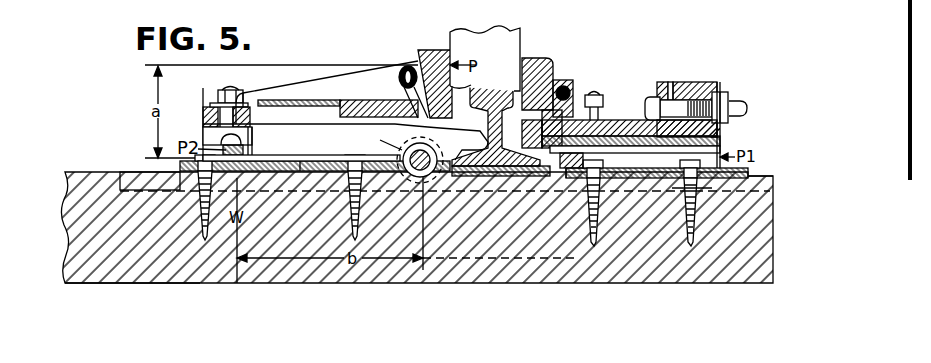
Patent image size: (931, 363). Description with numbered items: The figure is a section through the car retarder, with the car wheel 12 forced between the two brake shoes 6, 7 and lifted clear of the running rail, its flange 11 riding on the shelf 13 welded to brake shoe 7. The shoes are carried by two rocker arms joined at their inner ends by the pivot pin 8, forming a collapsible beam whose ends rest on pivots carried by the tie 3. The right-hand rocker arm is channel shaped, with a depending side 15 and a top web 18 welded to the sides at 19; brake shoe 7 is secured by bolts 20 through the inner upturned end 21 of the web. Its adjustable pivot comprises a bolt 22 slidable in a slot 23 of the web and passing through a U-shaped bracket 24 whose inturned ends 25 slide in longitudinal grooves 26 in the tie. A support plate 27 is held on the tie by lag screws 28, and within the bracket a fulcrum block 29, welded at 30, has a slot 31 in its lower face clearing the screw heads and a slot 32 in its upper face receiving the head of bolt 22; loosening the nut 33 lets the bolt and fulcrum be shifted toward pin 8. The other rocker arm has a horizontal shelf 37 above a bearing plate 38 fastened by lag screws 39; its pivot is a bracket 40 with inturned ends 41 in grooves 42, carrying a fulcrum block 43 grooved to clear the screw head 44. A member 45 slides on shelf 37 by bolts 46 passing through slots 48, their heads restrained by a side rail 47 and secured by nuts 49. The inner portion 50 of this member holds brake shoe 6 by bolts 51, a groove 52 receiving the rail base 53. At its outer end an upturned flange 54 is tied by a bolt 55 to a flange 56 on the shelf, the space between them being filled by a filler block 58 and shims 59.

The tie 3 is at (237, 268).
The brake shoe 6 is at (527, 60).
The brake shoe 7 is at (425, 53).
The pivot pin 8 is at (410, 152).
The flange 11 is at (496, 124).
The car wheel 12 is at (540, 25).
The shelf 13 is at (471, 86).
The depending side 15 is at (297, 88).
The shelf or web 18 is at (323, 110).
The weld 19 is at (355, 100).
The bolts 20 is at (404, 70).
The inner upturned end 21 is at (398, 94).
The bolt 22 is at (205, 112).
The slot 23 is at (264, 108).
The U-shaped bracket 24 is at (246, 97).
The inturned ends 25 is at (212, 242).
The longitudinal grooves 26 is at (147, 176).
The support plate 27 is at (306, 174).
The lag screws 28 is at (351, 214).
The fulcrum block 29 is at (247, 151).
The weld 30 is at (249, 129).
The slot 31 is at (292, 160).
The slot 32 is at (217, 134).
The nut 33 is at (219, 97).
The shelf or cover 37 is at (721, 137).
The bearing plate 38 is at (748, 172).
The lag screws 39 is at (700, 216).
The bracket 40 is at (721, 148).
The inturned ends 41 is at (722, 192).
The grooves 42 is at (764, 190).
The fulcrum block 43 is at (685, 158).
The head 44 is at (604, 227).
The slidable member 45 is at (634, 128).
The bolts 46 is at (596, 92).
The side rail 47 is at (550, 187).
The slots 48 is at (628, 128).
The nuts 49 is at (588, 96).
The portion 50 is at (545, 116).
The bolts 51 is at (562, 86).
The groove 52 is at (501, 186).
The base 53 is at (540, 130).
The upturned flange 54 is at (662, 84).
The bolt 55 is at (700, 100).
The flange 56 is at (712, 86).
The filler block 58 is at (689, 84).
The shims 59 is at (670, 84).